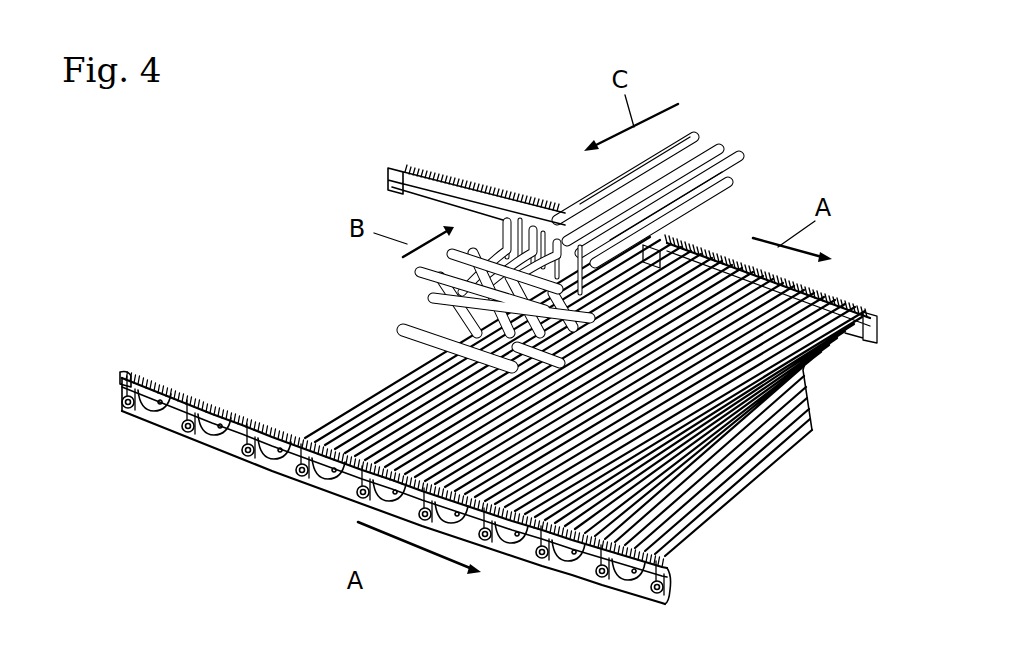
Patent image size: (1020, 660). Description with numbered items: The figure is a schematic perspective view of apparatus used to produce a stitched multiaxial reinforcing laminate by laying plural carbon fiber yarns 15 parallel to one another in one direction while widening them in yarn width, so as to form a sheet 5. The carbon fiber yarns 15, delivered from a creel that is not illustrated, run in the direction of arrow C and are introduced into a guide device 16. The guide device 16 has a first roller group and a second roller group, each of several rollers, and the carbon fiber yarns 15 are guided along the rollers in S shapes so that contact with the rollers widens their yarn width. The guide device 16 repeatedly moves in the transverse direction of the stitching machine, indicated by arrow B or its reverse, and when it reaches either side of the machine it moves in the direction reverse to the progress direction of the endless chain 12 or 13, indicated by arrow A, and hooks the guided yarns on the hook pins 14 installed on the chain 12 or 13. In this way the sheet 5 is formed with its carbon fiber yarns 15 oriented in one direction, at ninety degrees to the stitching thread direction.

The sheet 5 is at (735, 483).
The endless chain 12 is at (172, 425).
The endless chain 13 is at (390, 170).
The hook pins 14 is at (453, 167).
The carbon fiber yarns 15 is at (742, 152).
The guide device 16 is at (412, 295).